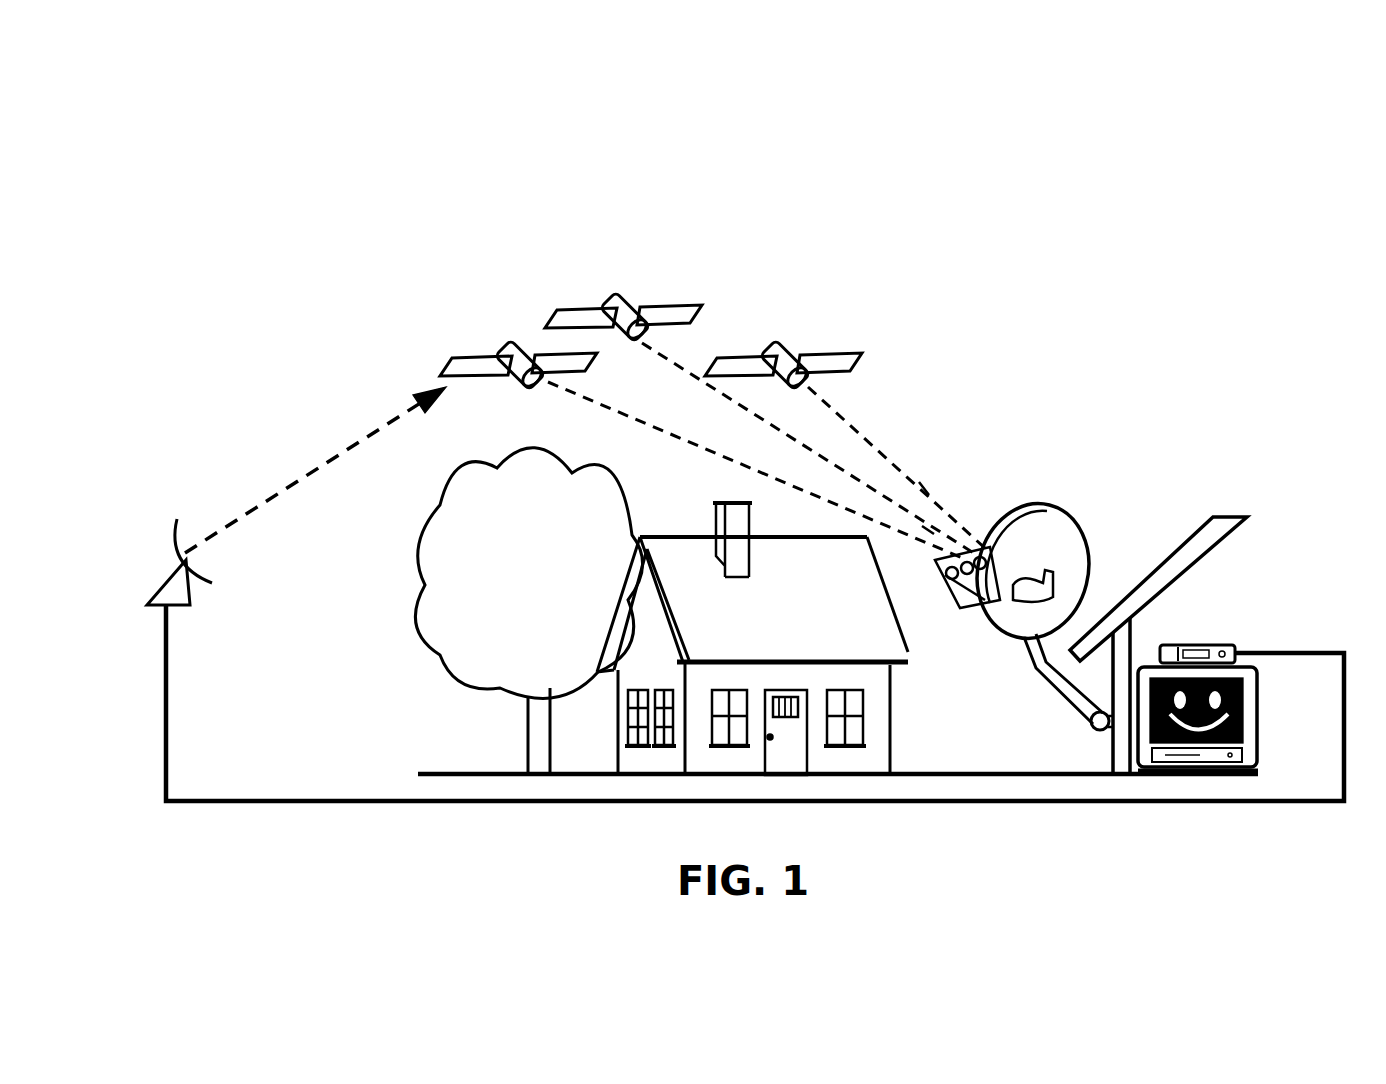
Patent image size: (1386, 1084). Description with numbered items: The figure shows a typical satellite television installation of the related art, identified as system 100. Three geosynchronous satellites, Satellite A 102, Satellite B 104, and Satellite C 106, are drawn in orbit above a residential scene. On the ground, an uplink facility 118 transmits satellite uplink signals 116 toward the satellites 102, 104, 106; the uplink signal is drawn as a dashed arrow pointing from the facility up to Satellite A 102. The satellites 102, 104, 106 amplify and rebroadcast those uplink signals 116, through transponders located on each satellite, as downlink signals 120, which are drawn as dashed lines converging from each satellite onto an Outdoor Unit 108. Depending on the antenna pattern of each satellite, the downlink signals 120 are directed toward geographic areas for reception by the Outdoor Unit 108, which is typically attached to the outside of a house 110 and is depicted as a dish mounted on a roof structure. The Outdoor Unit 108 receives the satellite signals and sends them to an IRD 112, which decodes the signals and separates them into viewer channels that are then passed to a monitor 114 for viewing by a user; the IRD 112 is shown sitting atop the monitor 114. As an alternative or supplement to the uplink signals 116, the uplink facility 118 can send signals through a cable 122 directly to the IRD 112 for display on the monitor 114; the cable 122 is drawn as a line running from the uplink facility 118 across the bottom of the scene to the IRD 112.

The system 100 is at (745, 137).
The Satellite A 102 is at (516, 348).
The Satellite B 104 is at (805, 352).
The Satellite C 106 is at (667, 305).
The Outdoor Unit (ODU) 108 is at (1047, 503).
The house 110 is at (1185, 540).
The IRD 112 is at (1200, 642).
The monitor 114 is at (1255, 700).
The satellite uplink signals 116 is at (319, 466).
The uplink facility 118 is at (165, 573).
The downlink signals 120 is at (925, 488).
The cable 122 is at (1280, 650).